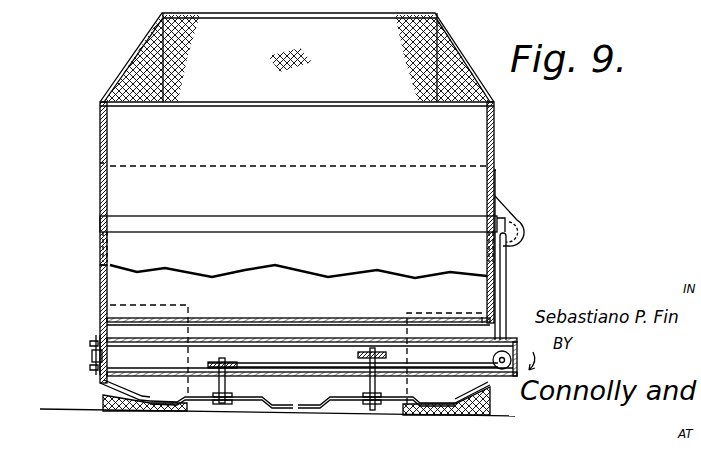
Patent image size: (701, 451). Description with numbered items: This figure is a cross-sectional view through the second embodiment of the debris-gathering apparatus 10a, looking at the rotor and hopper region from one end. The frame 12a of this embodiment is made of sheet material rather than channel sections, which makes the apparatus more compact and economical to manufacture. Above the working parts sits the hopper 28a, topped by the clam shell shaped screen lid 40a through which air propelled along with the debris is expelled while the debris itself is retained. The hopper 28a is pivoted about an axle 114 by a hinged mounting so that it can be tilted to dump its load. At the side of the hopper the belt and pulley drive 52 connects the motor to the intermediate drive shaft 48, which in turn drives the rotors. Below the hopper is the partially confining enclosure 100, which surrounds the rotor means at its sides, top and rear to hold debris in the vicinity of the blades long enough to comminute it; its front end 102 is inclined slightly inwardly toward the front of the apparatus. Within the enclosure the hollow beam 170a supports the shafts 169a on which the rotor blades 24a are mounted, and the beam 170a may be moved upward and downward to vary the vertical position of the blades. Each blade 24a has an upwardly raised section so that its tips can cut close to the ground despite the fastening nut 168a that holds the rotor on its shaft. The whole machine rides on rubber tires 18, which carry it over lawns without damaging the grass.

The screen lid 40a is at (128, 60).
The debris-gathering apparatus 10a is at (94, 193).
The frame 12a is at (100, 288).
The hopper 28a is at (305, 153).
The axle 114 is at (320, 216).
The belt and pulley drive 52 is at (505, 208).
The intermediate drive shaft 48 is at (506, 275).
The enclosure 100 is at (119, 331).
The hollow beam 170a is at (252, 340).
The shafts 169a is at (225, 388).
The fastening nut 168a is at (368, 398).
The rotor blades 24a is at (282, 405).
The front end 102 is at (118, 395).
The rubber tires 18 is at (128, 410).